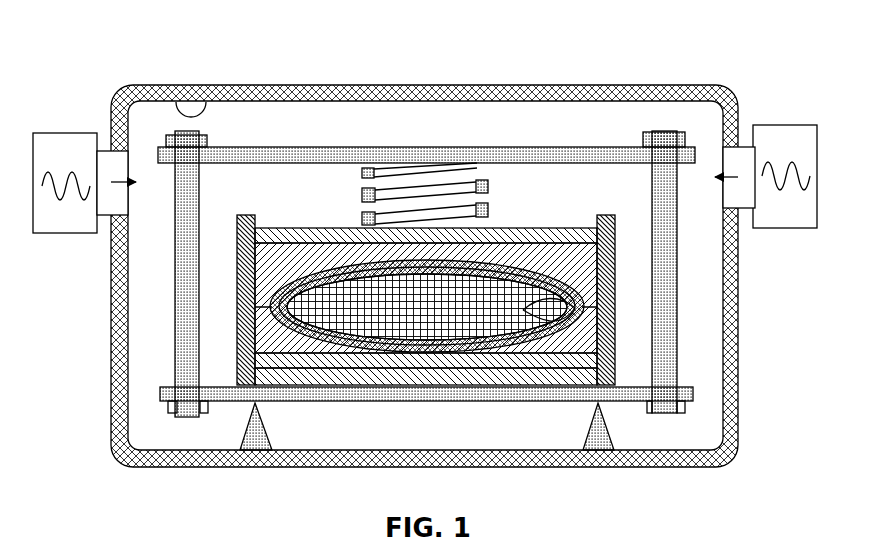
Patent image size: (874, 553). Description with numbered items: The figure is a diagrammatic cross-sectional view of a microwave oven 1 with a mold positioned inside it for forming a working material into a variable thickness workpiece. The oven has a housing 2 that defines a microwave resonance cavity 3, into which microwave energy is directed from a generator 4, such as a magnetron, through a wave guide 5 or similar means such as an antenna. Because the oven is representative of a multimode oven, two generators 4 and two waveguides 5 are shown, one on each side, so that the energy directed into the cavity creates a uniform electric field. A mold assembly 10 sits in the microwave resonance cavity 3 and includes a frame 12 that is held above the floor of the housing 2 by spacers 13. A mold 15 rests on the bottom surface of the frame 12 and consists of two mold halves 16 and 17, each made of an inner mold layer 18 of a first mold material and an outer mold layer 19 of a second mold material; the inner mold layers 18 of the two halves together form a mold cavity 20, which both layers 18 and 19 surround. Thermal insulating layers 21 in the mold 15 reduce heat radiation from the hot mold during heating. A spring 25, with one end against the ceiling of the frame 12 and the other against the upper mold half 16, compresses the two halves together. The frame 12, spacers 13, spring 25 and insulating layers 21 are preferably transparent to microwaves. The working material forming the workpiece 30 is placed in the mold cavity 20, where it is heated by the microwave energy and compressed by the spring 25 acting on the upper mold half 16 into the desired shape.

The microwave oven 1 is at (742, 69).
The housing 2 is at (126, 88).
The microwave resonance cavity 3 is at (207, 114).
The generator 4 is at (72, 133).
The wave guide 5 is at (104, 152).
The mold assembly 10 is at (170, 378).
The frame 12 is at (183, 313).
The spacers 13 is at (257, 435).
The mold 15 is at (254, 212).
The upper mold half 16 is at (267, 282).
The lower mold half 17 is at (265, 353).
The inner mold layer 18 is at (533, 268).
The outer mold layer 19 is at (560, 268).
The mold cavity 20 is at (372, 280).
The thermal insulating layers 21 is at (614, 232).
The spring 25 is at (490, 182).
The workpiece 30 is at (523, 310).